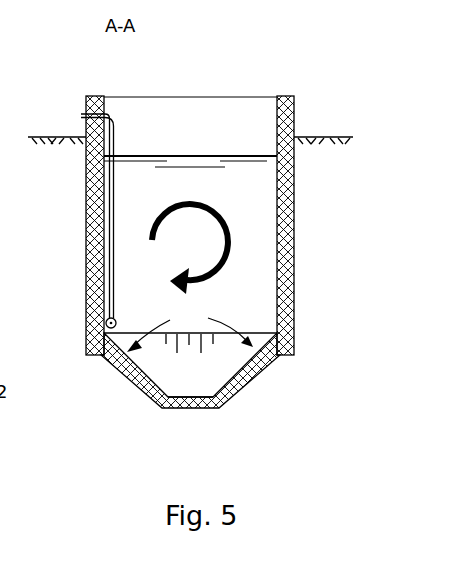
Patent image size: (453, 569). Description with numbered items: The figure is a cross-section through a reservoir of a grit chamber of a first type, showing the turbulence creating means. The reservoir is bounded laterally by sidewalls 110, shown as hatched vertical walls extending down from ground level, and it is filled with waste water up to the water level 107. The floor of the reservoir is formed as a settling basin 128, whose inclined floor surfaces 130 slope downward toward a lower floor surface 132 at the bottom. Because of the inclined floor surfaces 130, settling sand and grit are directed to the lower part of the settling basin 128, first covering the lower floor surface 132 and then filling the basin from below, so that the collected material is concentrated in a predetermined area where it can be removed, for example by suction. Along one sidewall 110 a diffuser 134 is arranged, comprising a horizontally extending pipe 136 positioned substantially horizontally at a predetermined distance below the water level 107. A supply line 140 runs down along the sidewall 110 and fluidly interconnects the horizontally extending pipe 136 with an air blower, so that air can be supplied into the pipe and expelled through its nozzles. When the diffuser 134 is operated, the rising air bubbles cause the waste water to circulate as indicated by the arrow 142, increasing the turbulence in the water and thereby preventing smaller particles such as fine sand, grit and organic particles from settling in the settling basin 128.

The water level 107 is at (223, 146).
The sidewalls 110 is at (271, 210).
The settling basin 128 is at (223, 362).
The inclined floor surfaces 130 is at (190, 329).
The lower floor surface 132 is at (194, 385).
The diffuser 134 is at (84, 367).
The horizontally extending pipe 136 is at (106, 330).
The supply line 140 is at (112, 248).
The arrow 142 is at (157, 216).